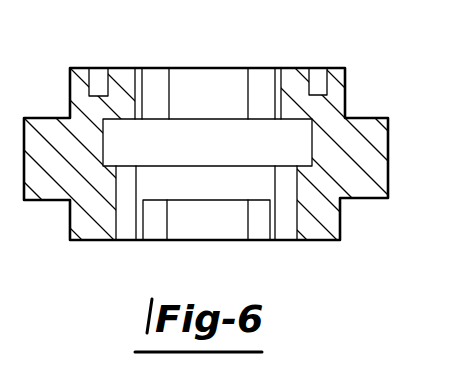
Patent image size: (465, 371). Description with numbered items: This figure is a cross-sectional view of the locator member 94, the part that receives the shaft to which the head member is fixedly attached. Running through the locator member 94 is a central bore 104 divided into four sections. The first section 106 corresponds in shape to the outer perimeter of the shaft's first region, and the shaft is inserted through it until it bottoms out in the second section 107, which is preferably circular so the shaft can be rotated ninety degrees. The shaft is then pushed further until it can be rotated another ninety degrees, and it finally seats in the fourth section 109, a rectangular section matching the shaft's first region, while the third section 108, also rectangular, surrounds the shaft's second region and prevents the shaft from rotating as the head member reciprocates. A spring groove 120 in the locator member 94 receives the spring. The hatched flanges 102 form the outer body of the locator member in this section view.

The locator member 94 is at (327, 252).
The flange 102 is at (47, 187).
The central bore 104 is at (235, 33).
The first section 106 is at (261, 77).
The second section 107 is at (297, 137).
The third section 108 is at (228, 187).
The fourth section 109 is at (188, 228).
The spring groove 120 is at (95, 78).